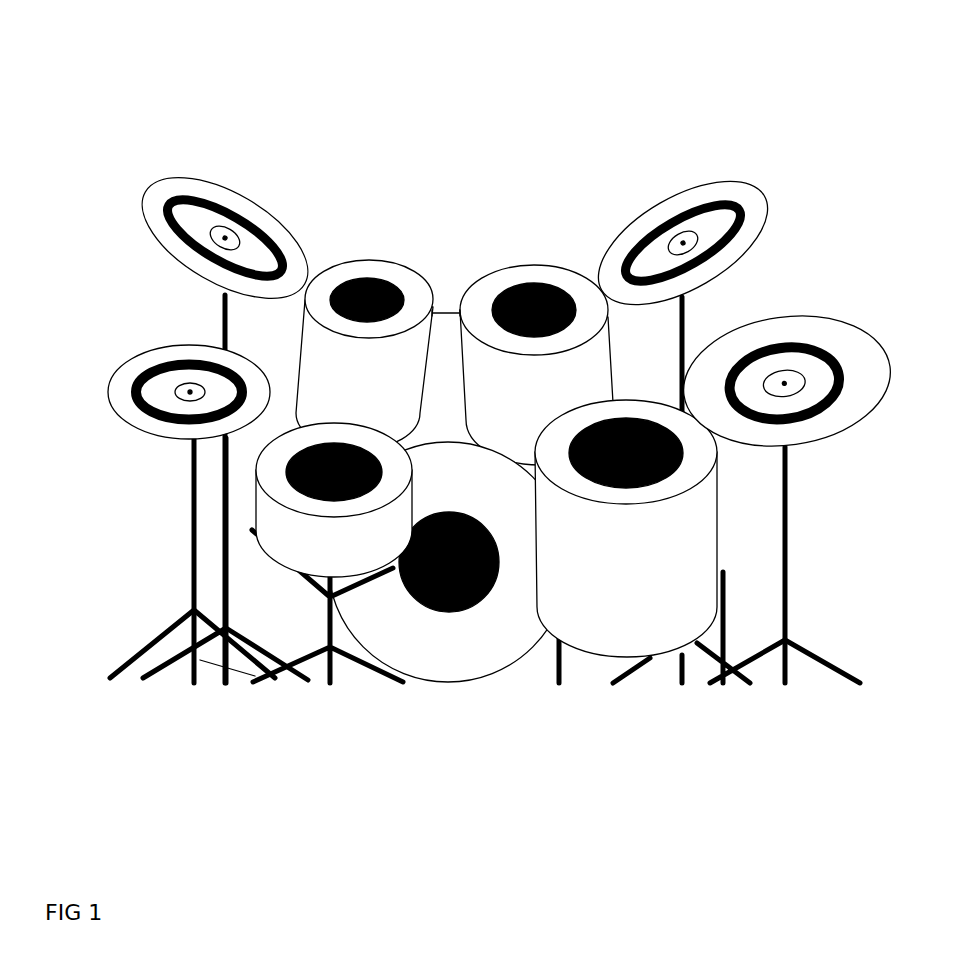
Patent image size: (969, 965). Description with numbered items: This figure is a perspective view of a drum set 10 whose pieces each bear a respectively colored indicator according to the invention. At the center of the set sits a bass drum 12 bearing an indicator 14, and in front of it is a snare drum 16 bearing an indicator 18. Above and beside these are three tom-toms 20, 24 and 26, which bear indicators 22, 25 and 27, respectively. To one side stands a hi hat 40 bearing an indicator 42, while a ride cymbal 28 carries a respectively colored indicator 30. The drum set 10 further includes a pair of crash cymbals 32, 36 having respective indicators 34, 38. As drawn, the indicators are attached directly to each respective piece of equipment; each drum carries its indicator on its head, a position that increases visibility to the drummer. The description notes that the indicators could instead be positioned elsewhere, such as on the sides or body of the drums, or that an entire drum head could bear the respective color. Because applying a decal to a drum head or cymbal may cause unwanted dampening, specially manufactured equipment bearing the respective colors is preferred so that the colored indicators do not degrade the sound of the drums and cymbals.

The drum set 10 is at (148, 62).
The bass drum 12 is at (493, 650).
The indicator 14 is at (447, 612).
The snare drum 16 is at (309, 560).
The indicator 18 is at (287, 472).
The tom-tom 20 is at (636, 595).
The indicator 22 is at (683, 463).
The tom-tom 24 is at (506, 405).
The indicator 25 is at (530, 287).
The tom-tom 26 is at (356, 403).
The indicator 27 is at (365, 280).
The ride cymbal 28 is at (856, 377).
The indicator 30 is at (820, 345).
The crash cymbal 32 is at (751, 208).
The indicator 34 is at (697, 202).
The crash cymbal 36 is at (246, 195).
The indicator 38 is at (178, 200).
The hi hat 40 is at (108, 395).
The indicator 42 is at (140, 372).